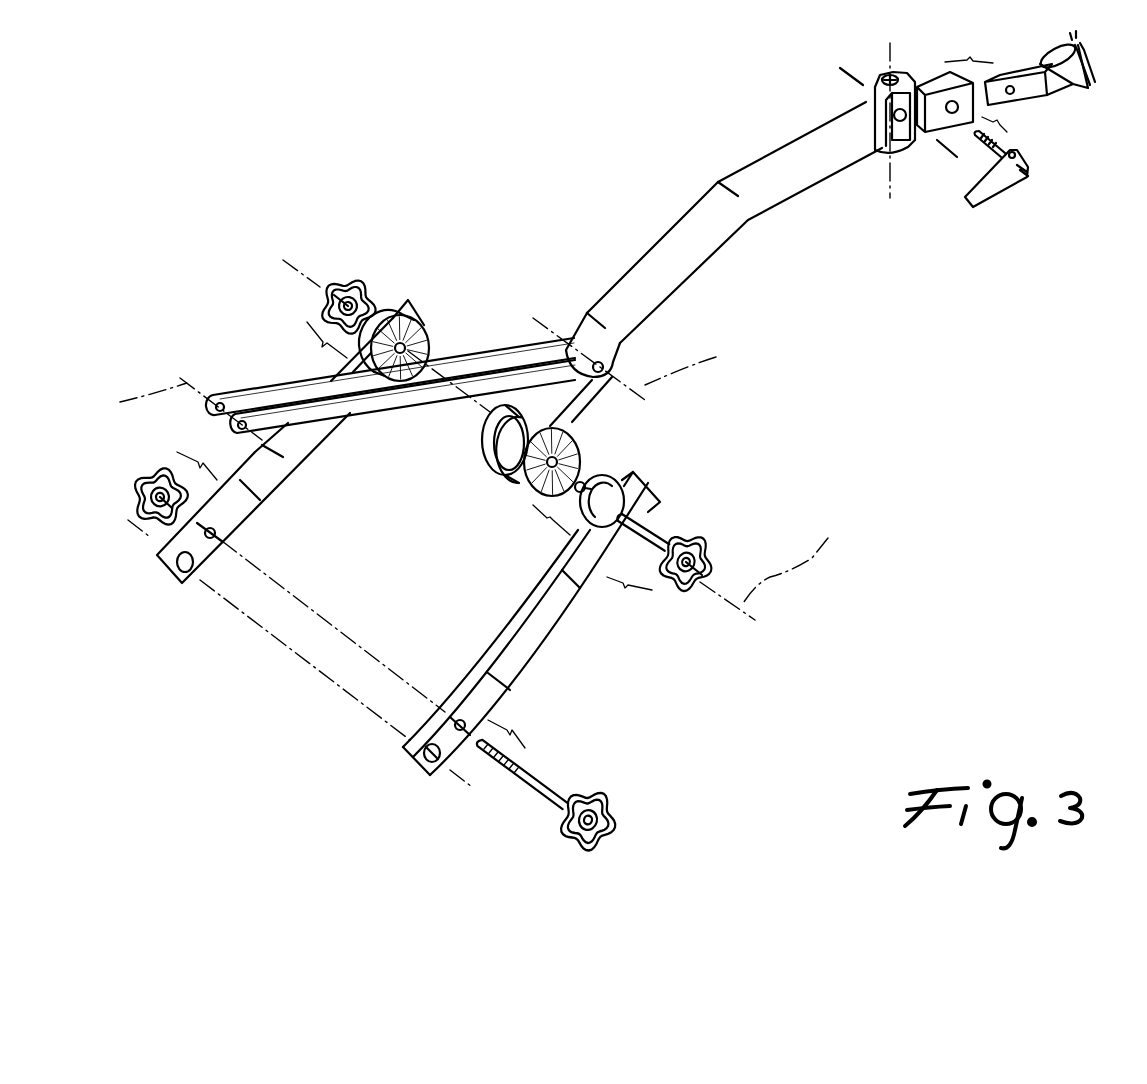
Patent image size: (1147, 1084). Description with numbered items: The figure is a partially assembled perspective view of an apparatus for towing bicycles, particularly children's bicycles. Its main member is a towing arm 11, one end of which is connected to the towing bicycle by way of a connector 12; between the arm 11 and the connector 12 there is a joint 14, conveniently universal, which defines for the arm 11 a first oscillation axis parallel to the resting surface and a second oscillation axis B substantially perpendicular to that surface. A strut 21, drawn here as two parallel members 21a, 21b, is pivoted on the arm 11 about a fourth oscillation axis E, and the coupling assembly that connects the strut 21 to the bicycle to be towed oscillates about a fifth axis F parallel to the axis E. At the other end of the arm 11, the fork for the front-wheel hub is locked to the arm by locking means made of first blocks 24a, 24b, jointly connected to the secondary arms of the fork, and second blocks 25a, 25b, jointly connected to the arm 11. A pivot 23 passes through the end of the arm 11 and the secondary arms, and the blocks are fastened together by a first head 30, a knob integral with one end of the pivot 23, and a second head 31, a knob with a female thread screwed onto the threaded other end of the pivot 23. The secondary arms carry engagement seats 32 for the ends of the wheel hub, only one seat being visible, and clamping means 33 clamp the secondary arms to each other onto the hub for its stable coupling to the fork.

The towing arm 11 is at (650, 253).
The connector 12 is at (1113, 227).
The joint 14 is at (883, 151).
The strut 21 is at (376, 339).
The first rail of support bar 21a is at (302, 382).
The second rail of support bar 21b is at (265, 412).
The pivot 23 is at (660, 520).
The first block 24a is at (386, 312).
The first block 24b is at (607, 476).
The second block 25a is at (483, 452).
The second block 25b is at (527, 498).
The first head 30 is at (710, 547).
The second head 31 is at (333, 278).
The engagement seat 32 is at (165, 568).
The clamping means 33 is at (616, 816).
The fourth oscillation axis E is at (639, 359).
The fifth axis of oscillation F is at (181, 409).
The second oscillation axis B is at (774, 560).